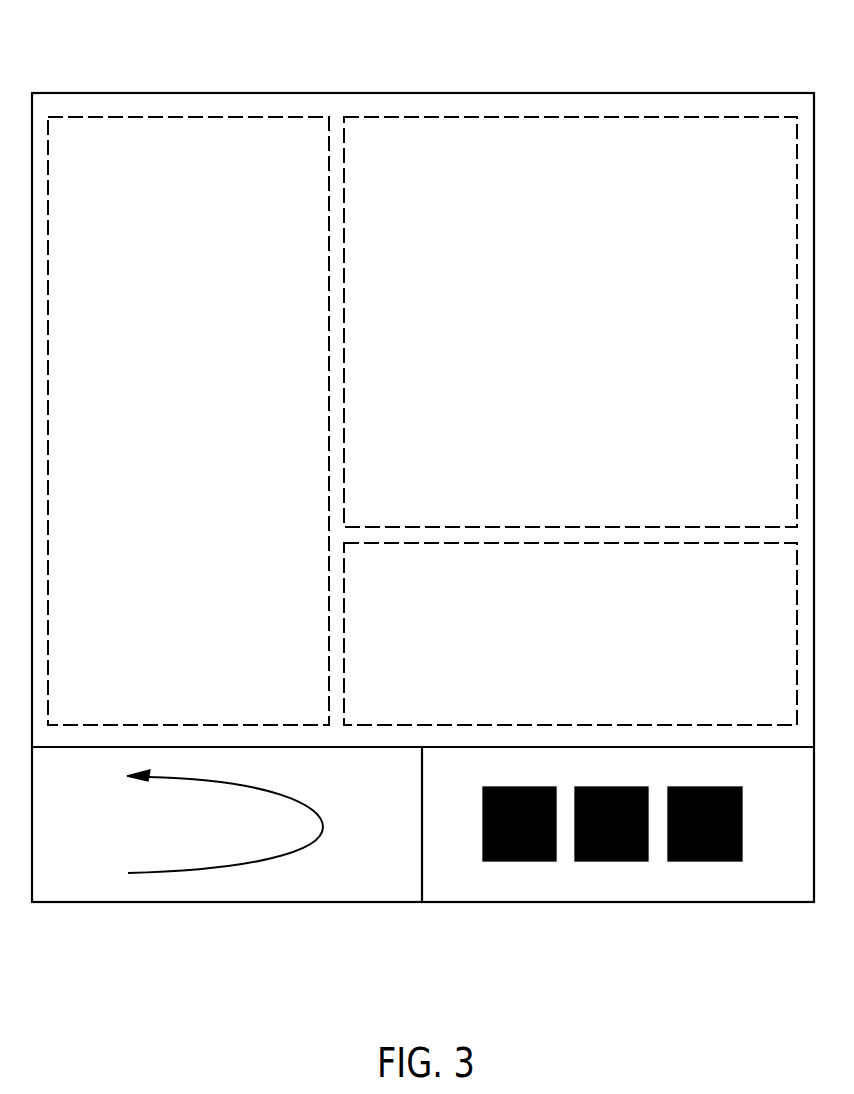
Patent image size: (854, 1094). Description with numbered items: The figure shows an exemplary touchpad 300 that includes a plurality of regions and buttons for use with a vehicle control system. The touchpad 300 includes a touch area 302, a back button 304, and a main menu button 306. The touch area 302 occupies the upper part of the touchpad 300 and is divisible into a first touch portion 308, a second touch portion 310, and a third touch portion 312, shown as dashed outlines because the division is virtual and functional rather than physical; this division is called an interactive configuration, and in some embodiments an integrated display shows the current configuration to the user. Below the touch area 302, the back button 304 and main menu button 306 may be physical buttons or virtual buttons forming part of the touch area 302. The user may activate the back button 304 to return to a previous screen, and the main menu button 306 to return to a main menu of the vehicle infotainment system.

The touchpad 300 is at (547, 93).
The touch area 302 is at (422, 388).
The back button 304 is at (270, 885).
The main menu button 306 is at (574, 885).
The first touch portion 308 is at (209, 404).
The second touch portion 310 is at (580, 329).
The third touch portion 312 is at (578, 644).